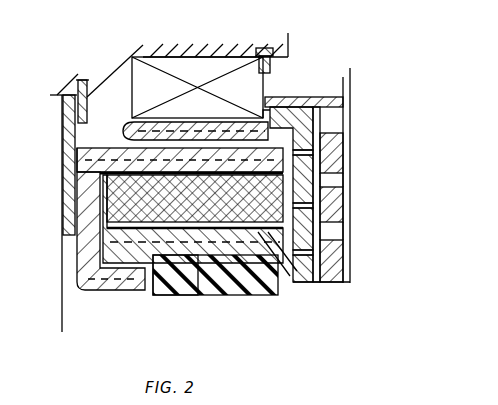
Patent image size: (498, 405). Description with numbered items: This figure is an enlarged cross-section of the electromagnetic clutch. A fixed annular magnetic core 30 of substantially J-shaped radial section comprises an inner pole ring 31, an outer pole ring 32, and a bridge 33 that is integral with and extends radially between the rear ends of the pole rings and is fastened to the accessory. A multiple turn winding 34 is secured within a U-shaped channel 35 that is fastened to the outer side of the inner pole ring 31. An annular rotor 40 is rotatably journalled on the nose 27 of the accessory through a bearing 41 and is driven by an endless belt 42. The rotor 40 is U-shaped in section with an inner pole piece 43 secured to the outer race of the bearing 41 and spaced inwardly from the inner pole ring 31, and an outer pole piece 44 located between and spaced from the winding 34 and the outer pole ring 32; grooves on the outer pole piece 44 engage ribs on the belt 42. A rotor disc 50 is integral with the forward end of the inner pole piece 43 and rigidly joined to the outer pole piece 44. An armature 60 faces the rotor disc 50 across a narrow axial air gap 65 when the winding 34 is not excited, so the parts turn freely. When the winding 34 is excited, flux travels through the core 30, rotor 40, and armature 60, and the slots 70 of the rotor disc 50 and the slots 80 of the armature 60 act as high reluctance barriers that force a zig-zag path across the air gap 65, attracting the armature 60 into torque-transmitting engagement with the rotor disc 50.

The nose 27 is at (288, 42).
The magnetic core 30 is at (113, 134).
The inner pole ring 31 is at (158, 152).
The outer pole ring 32 is at (113, 290).
The bridge 33 is at (76, 268).
The multiple turn winding 34 is at (187, 168).
The U-shaped channel 35 is at (209, 187).
The rotor 40 is at (240, 118).
The bearing 41 is at (197, 65).
The endless belt 42 is at (224, 290).
The inner pole piece 43 is at (230, 119).
The outer pole piece 44 is at (183, 292).
The rotor disc 50 is at (352, 146).
The armature 60 is at (350, 262).
The air gap 65 is at (315, 282).
The rotor disc slots 70 is at (302, 152).
The armature disc slots 80 is at (342, 181).